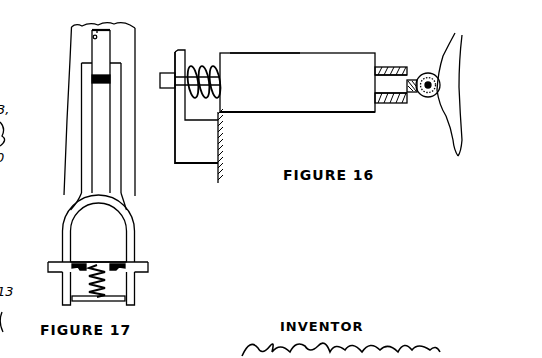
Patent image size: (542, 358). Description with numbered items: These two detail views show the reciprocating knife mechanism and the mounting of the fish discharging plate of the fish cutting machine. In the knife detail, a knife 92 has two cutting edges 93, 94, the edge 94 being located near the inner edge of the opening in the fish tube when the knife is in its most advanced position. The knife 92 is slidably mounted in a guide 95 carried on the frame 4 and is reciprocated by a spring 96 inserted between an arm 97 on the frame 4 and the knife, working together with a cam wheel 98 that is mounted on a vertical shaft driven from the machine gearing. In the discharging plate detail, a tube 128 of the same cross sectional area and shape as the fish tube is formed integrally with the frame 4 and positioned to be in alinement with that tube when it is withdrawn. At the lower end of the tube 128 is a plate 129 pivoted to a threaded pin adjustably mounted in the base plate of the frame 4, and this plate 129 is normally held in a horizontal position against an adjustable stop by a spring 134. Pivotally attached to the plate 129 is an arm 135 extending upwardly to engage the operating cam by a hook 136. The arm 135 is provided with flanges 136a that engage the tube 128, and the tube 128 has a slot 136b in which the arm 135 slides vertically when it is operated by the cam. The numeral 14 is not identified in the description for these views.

In FIG. 17, the tube 128 is at (72, 58).
In FIG. 17, the arm 135 is at (92, 180).
In FIG. 17, the hook 136 is at (106, 82).
In FIG. 17, the flanges 136a is at (115, 105).
In FIG. 17, the slot 136b is at (92, 31).
In FIG. 17, the flange 14 is at (142, 266).
In FIG. 17, the spring 134 is at (96, 281).
In FIG. 17, the plate 129 is at (114, 299).
In FIG. 16, the arm 97 is at (183, 133).
In FIG. 16, the frame 4 is at (222, 156).
In FIG. 16, the spring 96 is at (198, 64).
In FIG. 16, the knife 92 is at (310, 70).
In FIG. 16, the edge 94 is at (268, 43).
In FIG. 16, the edge 93 is at (313, 115).
In FIG. 16, the guide 95 is at (390, 67).
In FIG. 16, the cam wheel 98 is at (445, 117).